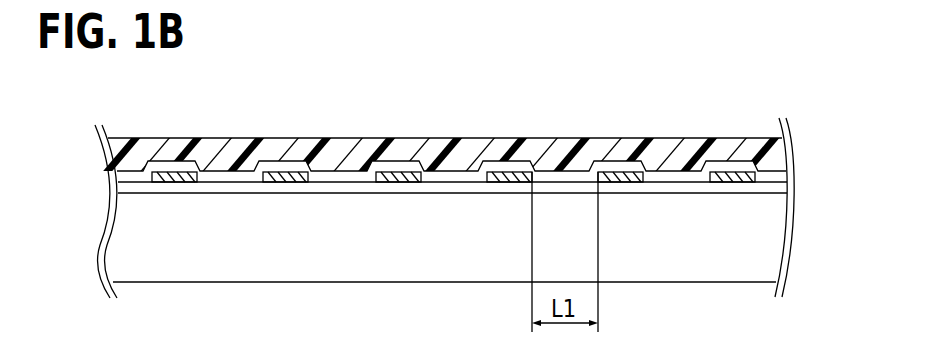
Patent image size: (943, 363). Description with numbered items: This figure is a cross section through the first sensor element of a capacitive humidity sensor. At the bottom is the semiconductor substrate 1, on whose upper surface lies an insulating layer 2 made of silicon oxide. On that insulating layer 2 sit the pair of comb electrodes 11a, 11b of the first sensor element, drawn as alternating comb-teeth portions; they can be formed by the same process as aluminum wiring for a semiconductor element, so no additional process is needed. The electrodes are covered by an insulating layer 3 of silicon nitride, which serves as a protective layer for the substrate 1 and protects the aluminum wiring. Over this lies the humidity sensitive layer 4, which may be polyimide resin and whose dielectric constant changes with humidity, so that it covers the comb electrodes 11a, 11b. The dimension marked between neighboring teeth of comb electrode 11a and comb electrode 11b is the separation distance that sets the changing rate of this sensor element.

The semiconductor substrate 1 is at (760, 235).
The insulating layer 2 is at (777, 188).
The insulating layer 3 is at (780, 178).
The humidity sensitive layer 4 is at (775, 157).
The comb electrode 11a is at (175, 173).
The comb electrode 11b is at (285, 173).